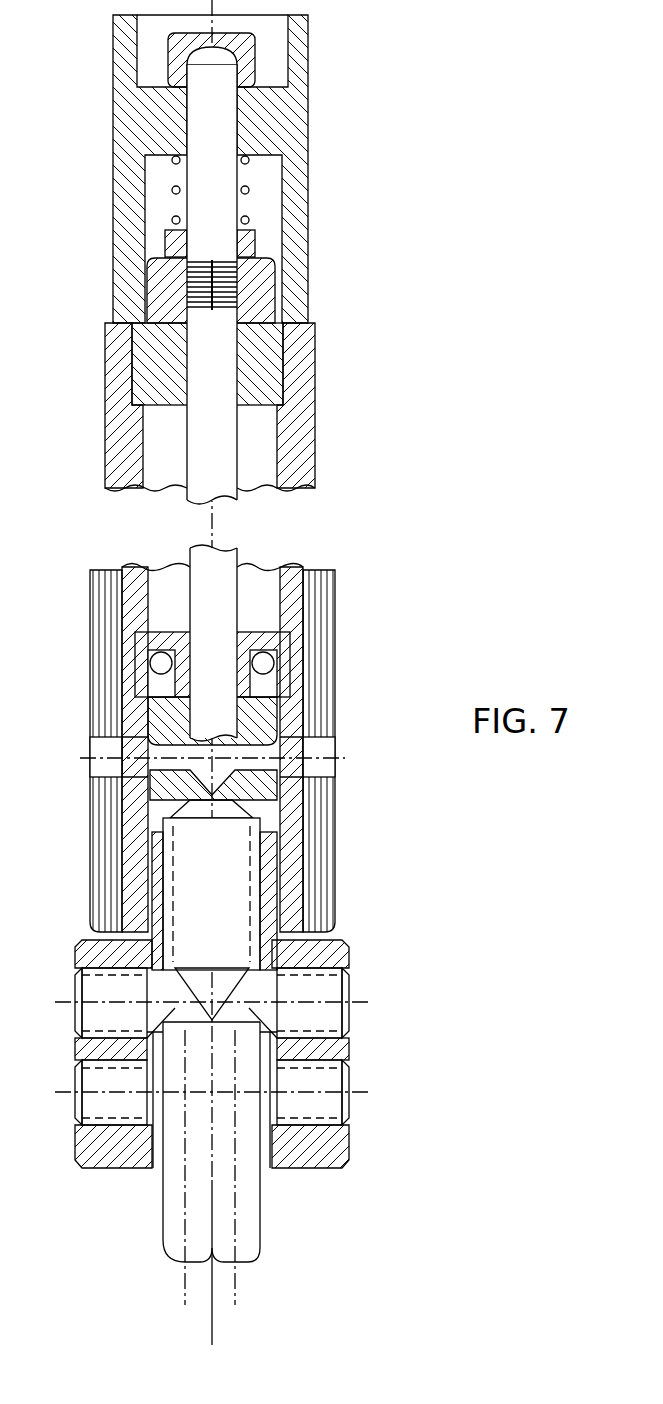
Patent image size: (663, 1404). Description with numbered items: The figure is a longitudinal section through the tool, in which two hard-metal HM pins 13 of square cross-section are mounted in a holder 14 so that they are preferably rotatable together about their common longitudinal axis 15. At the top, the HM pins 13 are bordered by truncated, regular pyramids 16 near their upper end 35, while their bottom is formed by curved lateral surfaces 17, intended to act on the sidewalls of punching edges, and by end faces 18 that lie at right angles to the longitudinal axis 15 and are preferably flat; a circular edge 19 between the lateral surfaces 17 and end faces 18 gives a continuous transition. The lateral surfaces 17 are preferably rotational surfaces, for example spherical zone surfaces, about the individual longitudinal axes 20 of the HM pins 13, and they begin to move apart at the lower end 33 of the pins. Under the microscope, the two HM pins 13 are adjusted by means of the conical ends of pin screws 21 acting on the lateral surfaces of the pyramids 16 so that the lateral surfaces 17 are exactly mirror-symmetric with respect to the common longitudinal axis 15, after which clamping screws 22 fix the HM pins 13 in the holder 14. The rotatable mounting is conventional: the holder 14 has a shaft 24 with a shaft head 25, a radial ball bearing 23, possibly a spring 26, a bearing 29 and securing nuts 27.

The HM pin 13 is at (250, 1217).
The holder 14 is at (362, 670).
The common longitudinal axis 15 is at (224, 1332).
The truncated regular pyramid 16 is at (300, 955).
The curved lateral surface 17 is at (167, 1250).
The end face 18 is at (181, 1265).
The circular edge 19 is at (178, 1263).
The longitudinal axis of HM pin 20 is at (237, 1288).
The pin screw 21 is at (328, 995).
The clamping screw 22 is at (328, 1087).
The radial ball bearing 23 is at (288, 637).
The shaft 24 is at (228, 552).
The shaft head 25 is at (235, 895).
The spring 26 is at (250, 185).
The securing nut 27 is at (255, 247).
The bearing 29 is at (272, 350).
The lower end 33 is at (138, 1226).
The upper end 35 is at (172, 993).